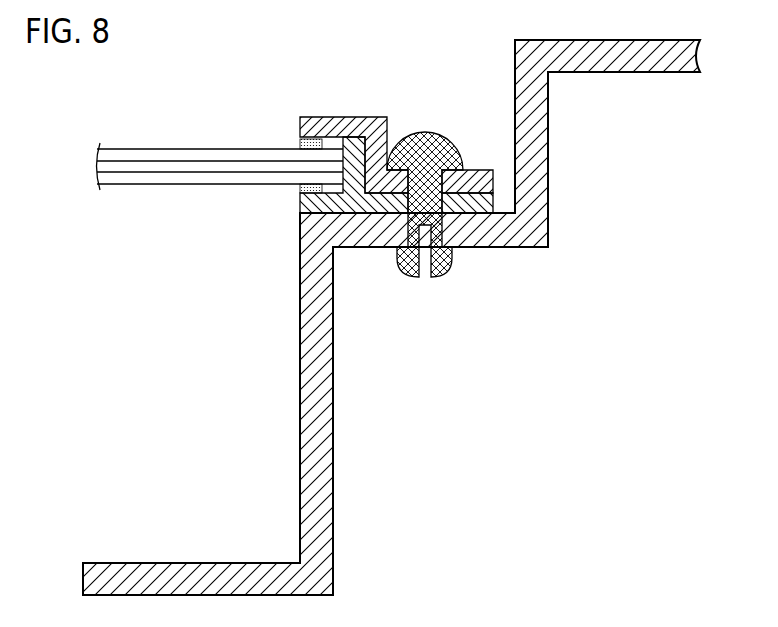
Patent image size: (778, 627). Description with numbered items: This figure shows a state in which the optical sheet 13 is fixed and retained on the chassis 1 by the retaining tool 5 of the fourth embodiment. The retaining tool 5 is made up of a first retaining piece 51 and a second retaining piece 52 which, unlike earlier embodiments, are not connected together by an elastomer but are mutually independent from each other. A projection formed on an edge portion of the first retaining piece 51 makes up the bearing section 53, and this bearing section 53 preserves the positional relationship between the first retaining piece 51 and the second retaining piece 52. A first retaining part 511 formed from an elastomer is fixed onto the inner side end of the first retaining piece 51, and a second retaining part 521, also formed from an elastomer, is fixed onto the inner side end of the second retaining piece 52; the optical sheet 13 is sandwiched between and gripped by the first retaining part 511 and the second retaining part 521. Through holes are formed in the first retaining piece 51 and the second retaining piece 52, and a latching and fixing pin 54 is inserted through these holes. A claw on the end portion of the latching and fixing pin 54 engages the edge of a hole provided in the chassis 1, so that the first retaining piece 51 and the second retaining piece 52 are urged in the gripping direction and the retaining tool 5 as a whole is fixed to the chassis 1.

The chassis 1 is at (330, 400).
The retaining tool 5 is at (333, 85).
The optical sheet 13 is at (145, 155).
The first retaining piece 51 is at (300, 205).
The first retaining part 511 is at (300, 186).
The second retaining piece 52 is at (378, 116).
The second retaining part 521 is at (300, 142).
The bearing section 53 is at (474, 183).
The latching and fixing pin 54 is at (437, 277).